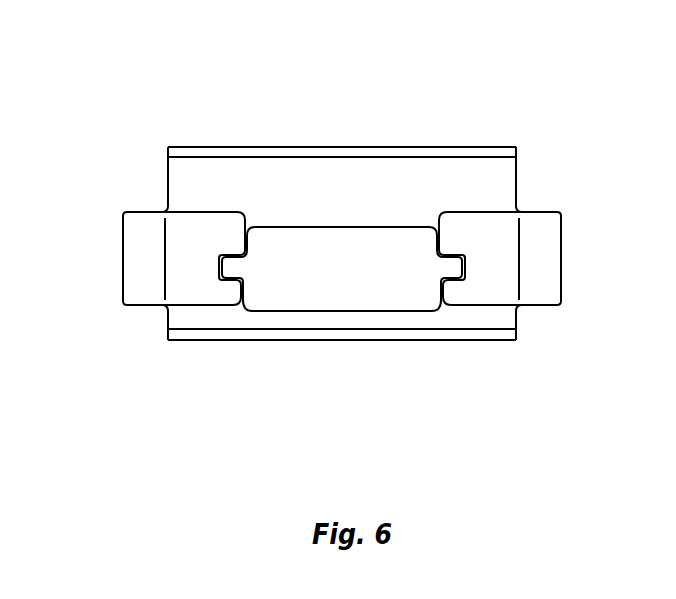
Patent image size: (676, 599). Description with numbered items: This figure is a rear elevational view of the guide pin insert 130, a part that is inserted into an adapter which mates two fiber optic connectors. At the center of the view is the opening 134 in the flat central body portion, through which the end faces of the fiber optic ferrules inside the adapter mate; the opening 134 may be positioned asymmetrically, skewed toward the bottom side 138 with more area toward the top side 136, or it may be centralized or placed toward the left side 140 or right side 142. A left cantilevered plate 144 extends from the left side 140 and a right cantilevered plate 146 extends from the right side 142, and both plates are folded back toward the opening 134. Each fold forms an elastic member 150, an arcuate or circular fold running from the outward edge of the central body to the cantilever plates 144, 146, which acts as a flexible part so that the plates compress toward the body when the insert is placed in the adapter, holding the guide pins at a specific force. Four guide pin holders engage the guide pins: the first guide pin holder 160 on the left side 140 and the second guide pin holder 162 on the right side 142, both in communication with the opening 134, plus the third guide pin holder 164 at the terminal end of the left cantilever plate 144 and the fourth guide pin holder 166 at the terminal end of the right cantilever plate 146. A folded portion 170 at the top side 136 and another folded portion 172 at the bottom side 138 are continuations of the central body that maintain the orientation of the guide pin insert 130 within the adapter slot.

The guide pin insert 130 is at (392, 118).
The opening 134 is at (279, 293).
The top side 136 is at (463, 138).
The bottom side 138 is at (503, 353).
The left side 140 is at (158, 196).
The right side 142 is at (534, 196).
The left cantilevered plate 144 is at (193, 291).
The right cantilevered plate 146 is at (503, 293).
The elastic member 150 is at (123, 249).
The first guide pin holder 160 is at (245, 254).
The second guide pin holder 162 is at (438, 280).
The third guide pin holder 164 is at (218, 284).
The fourth guide pin holder 166 is at (456, 278).
The folded portion 170 is at (298, 147).
The folded portion 172 is at (347, 341).